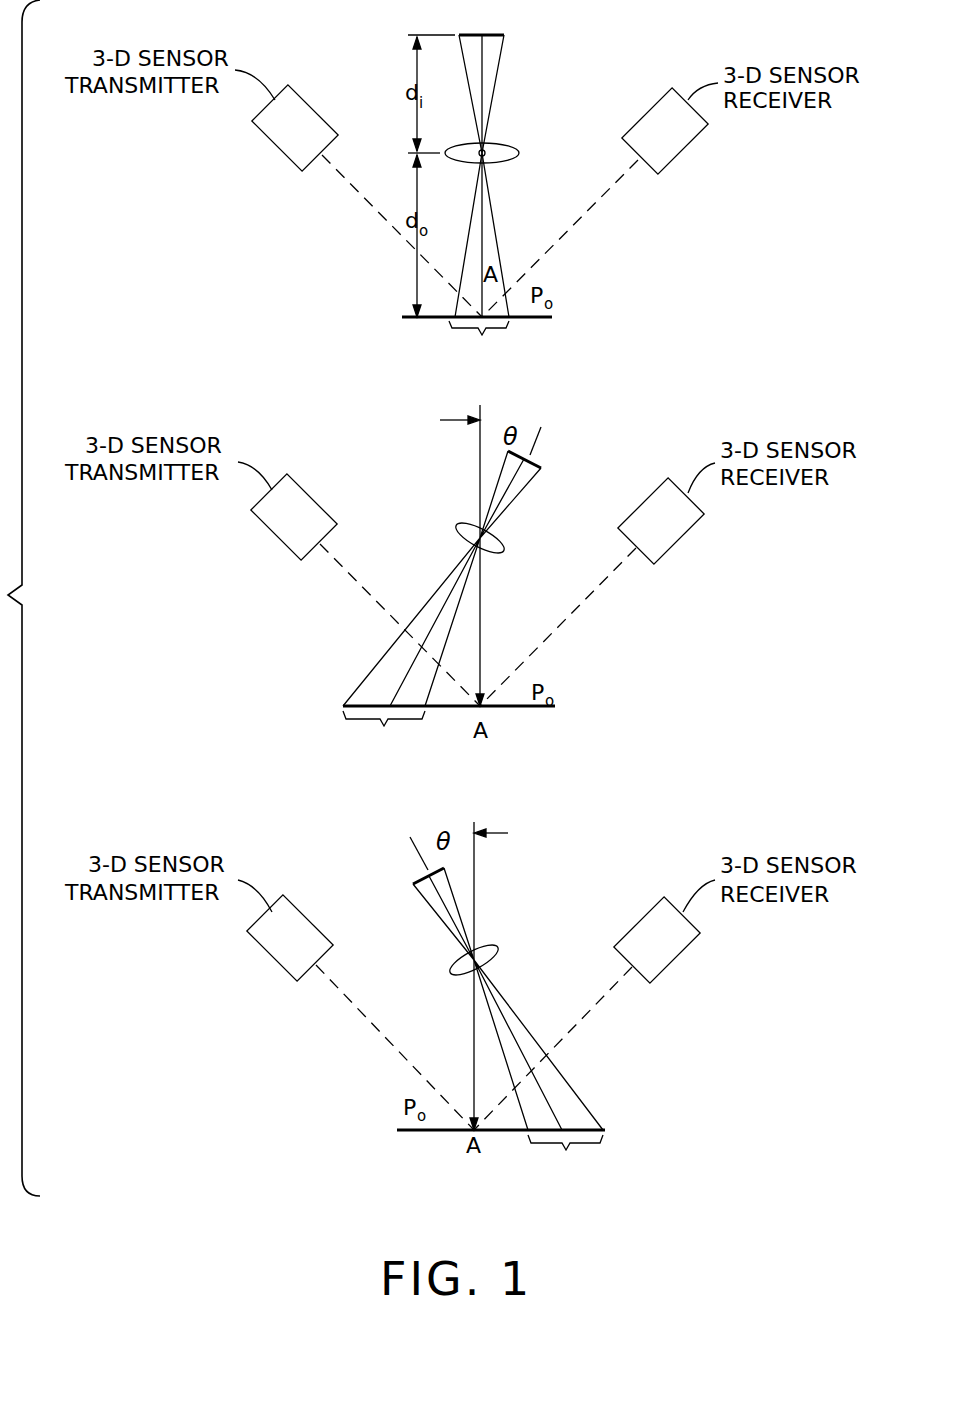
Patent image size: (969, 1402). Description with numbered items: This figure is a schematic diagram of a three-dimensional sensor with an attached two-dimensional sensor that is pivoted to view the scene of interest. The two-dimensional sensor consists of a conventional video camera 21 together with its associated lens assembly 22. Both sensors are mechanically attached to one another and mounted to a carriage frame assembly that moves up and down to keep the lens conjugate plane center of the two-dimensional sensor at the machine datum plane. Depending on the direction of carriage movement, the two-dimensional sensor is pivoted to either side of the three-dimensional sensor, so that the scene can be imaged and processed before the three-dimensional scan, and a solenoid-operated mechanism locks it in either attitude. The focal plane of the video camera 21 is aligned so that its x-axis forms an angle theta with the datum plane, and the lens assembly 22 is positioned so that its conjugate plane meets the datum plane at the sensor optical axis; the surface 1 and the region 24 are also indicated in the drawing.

The object surface 1 is at (534, 320).
The video camera 21 is at (478, 31).
The lens assembly 22 is at (516, 156).
The illuminated area on object 24 is at (473, 753).